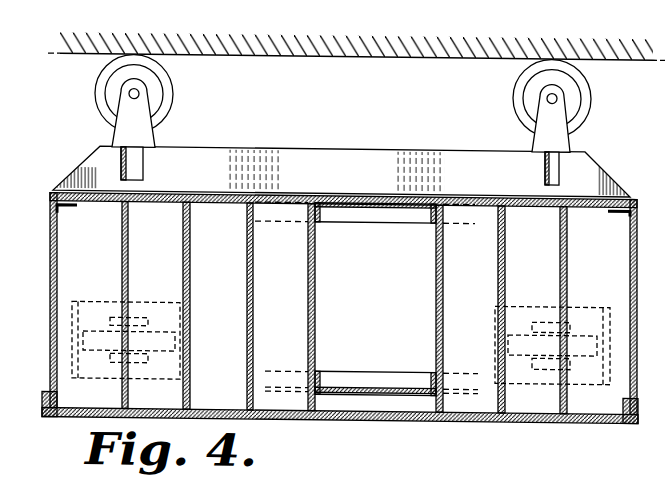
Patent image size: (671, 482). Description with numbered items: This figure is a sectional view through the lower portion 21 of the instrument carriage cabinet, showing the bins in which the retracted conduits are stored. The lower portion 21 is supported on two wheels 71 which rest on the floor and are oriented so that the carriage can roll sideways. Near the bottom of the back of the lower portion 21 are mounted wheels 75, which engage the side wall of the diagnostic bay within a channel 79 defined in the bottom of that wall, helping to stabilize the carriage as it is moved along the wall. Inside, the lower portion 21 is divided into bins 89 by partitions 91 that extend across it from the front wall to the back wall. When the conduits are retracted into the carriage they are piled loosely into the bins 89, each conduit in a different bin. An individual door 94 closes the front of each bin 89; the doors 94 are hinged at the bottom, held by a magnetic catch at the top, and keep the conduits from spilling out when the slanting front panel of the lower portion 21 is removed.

The lower portion of the cabinet 21 is at (337, 256).
The wheels 71 is at (72, 324).
The wheels 75 is at (95, 95).
The channel 79 is at (392, 56).
The bins 89 is at (217, 209).
The partitions 91 is at (122, 254).
The door 94 is at (216, 404).